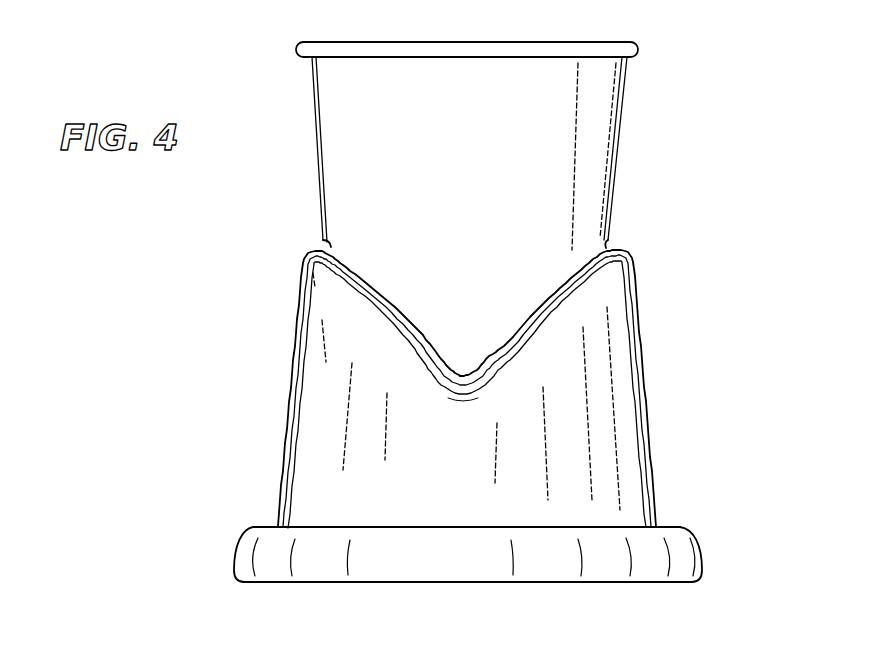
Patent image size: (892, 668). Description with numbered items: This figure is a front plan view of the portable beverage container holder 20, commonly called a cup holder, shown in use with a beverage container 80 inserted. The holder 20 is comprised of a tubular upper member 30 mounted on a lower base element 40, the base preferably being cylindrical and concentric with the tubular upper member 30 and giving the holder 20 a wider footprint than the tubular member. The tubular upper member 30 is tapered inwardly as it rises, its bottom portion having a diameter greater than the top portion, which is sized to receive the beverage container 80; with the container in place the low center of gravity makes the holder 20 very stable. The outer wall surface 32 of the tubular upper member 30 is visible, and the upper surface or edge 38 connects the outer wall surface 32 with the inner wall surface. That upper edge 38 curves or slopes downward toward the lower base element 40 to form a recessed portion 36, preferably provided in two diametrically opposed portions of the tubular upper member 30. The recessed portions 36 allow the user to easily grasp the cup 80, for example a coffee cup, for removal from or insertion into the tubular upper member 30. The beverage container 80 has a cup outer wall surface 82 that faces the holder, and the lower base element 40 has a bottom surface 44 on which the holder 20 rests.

The beverage container holder 20 is at (168, 338).
The tubular upper member 30 is at (635, 396).
The outer wall surface 32 is at (607, 456).
The recessed portion 36 is at (470, 372).
The upper surface or edge 38 is at (333, 250).
The lower base element 40 is at (229, 564).
The bottom surface 44 is at (608, 583).
The beverage container 80 is at (626, 84).
The cup outer wall surface 82 is at (357, 152).